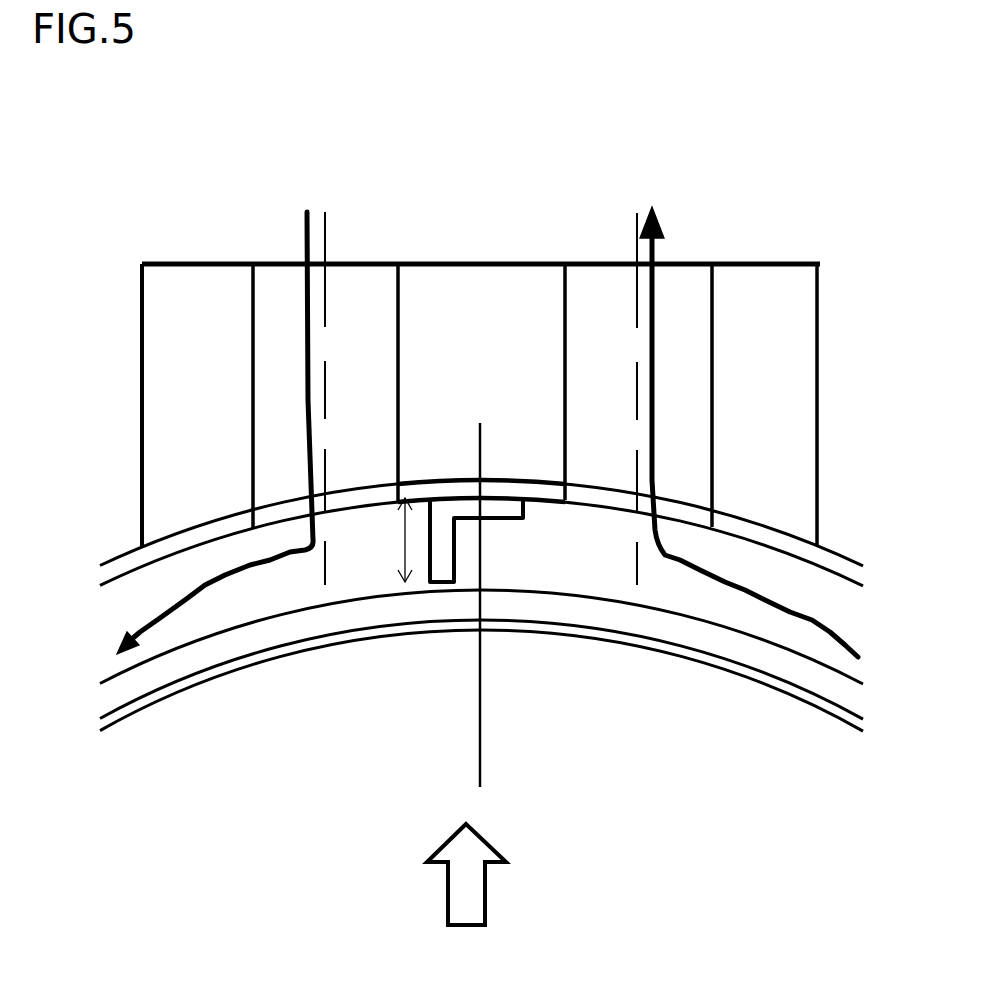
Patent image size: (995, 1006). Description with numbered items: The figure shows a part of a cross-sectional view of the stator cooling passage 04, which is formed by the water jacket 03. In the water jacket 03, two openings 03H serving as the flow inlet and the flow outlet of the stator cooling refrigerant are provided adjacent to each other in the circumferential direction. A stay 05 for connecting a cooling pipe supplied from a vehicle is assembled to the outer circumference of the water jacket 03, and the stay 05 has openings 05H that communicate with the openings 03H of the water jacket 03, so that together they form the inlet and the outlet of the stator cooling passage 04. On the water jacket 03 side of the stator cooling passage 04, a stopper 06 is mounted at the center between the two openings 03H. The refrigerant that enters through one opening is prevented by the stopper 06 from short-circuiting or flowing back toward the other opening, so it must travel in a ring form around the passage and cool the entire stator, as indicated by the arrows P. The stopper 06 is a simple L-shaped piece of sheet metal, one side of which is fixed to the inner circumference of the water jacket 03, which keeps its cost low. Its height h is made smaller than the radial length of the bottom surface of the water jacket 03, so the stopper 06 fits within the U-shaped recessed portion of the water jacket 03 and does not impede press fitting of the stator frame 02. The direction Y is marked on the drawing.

The stator frame 02 is at (313, 617).
The water jacket 03 is at (118, 560).
The openings 03H is at (358, 510).
The stator cooling passage 04 is at (517, 563).
The stay 05 is at (193, 305).
The openings 05H is at (360, 305).
The stopper 06 is at (440, 563).
The height of the stopper h is at (399, 540).
The arrows P is at (487, 411).
The direction Y is at (475, 874).